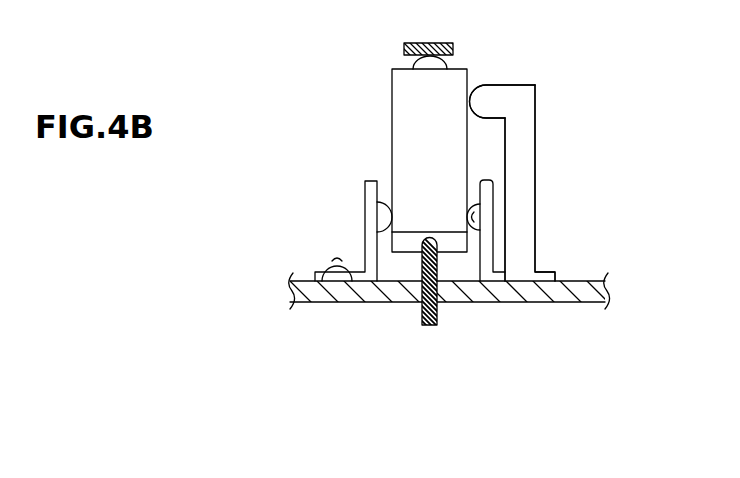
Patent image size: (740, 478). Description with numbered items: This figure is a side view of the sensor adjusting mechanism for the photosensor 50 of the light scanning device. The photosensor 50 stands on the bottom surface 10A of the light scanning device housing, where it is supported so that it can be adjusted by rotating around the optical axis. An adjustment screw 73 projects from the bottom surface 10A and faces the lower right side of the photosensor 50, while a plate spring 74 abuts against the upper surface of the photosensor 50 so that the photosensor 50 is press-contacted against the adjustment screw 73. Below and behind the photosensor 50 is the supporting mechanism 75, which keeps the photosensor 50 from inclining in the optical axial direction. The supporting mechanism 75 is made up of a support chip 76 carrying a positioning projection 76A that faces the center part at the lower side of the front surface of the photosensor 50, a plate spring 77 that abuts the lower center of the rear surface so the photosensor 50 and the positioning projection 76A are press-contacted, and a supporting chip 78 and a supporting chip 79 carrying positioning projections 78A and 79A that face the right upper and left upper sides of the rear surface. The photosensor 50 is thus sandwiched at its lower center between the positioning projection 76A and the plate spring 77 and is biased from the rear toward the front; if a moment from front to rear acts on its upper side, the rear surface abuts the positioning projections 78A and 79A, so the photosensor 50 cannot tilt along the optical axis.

The bottom surface 10A is at (313, 303).
The photosensor 50 is at (392, 127).
The adjustment screw 73 is at (430, 232).
The plate spring 74 is at (404, 49).
The supporting mechanism 75 is at (471, 261).
The support chip 76 is at (378, 254).
The positioning projection 76A is at (392, 195).
The plate spring 77 is at (481, 257).
The supporting chip 78 is at (535, 233).
The supporting chip 79 is at (530, 183).
The positioning projection 78A is at (480, 84).
The positioning projection 79A is at (503, 101).